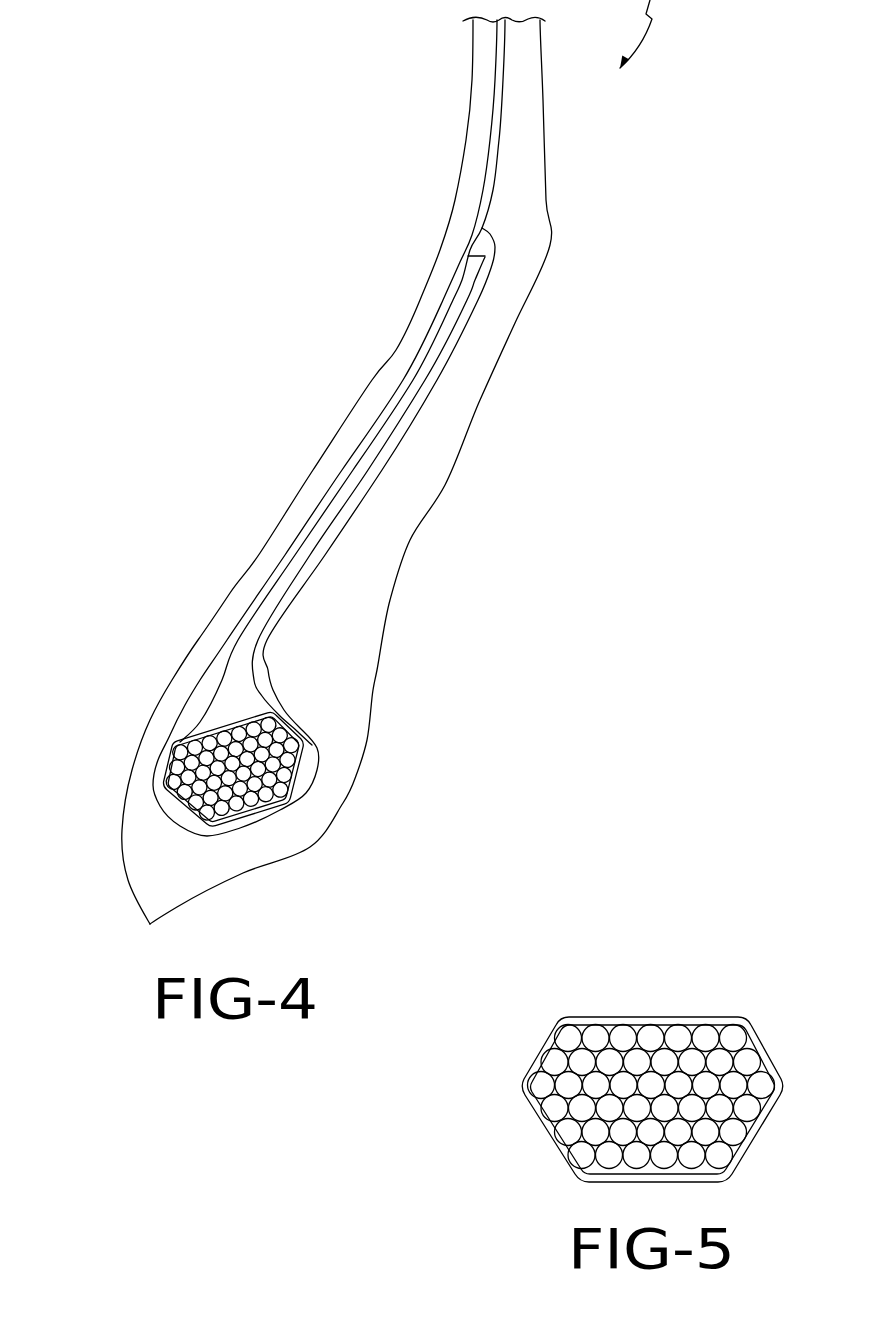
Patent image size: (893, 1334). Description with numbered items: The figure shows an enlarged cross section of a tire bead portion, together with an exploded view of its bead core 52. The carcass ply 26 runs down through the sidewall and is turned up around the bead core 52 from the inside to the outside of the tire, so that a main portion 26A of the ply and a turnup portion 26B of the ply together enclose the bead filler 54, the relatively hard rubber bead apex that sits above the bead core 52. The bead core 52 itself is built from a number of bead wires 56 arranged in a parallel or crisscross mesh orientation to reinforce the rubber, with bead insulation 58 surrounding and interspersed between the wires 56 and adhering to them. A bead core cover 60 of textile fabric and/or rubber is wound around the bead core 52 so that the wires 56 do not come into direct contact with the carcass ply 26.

In FIG. 4, the carcass ply 26 is at (497, 170).
In FIG. 4, the carcass ply main portion 26A is at (437, 313).
In FIG. 4, the carcass ply turn-up portion 26B is at (477, 313).
In FIG. 4, the bead core 52 is at (246, 789).
In FIG. 5, the bead core 52 is at (605, 1045).
In FIG. 4, the bead filler 54 is at (238, 712).
In FIG. 5, the bead wires 56 is at (612, 1063).
In FIG. 5, the bead insulation 58 is at (565, 1153).
In FIG. 4, the bead core cover 60 is at (298, 780).
In FIG. 5, the bead core cover 60 is at (530, 1108).